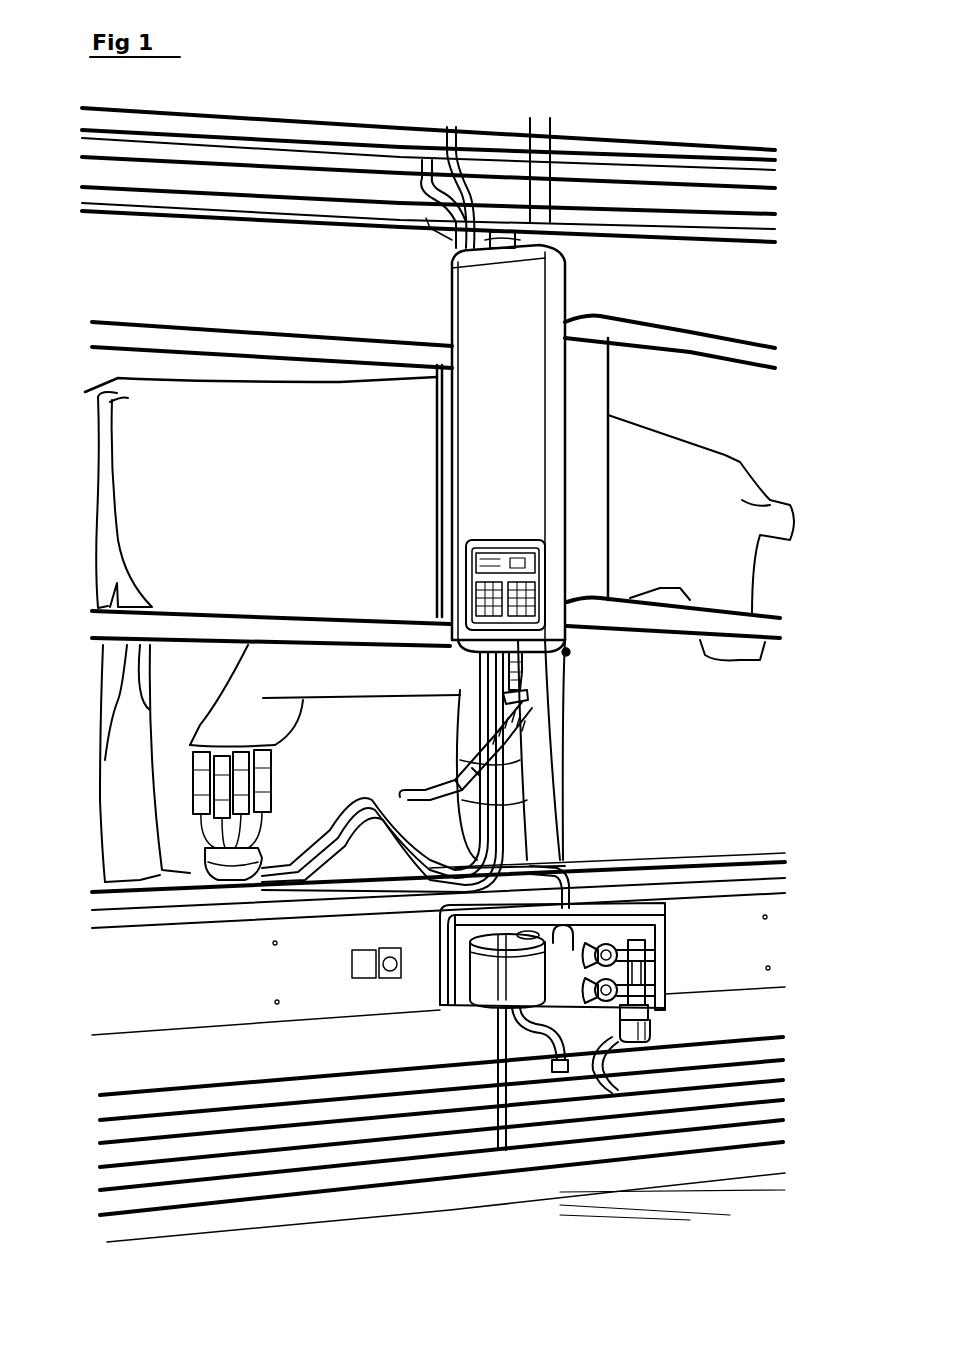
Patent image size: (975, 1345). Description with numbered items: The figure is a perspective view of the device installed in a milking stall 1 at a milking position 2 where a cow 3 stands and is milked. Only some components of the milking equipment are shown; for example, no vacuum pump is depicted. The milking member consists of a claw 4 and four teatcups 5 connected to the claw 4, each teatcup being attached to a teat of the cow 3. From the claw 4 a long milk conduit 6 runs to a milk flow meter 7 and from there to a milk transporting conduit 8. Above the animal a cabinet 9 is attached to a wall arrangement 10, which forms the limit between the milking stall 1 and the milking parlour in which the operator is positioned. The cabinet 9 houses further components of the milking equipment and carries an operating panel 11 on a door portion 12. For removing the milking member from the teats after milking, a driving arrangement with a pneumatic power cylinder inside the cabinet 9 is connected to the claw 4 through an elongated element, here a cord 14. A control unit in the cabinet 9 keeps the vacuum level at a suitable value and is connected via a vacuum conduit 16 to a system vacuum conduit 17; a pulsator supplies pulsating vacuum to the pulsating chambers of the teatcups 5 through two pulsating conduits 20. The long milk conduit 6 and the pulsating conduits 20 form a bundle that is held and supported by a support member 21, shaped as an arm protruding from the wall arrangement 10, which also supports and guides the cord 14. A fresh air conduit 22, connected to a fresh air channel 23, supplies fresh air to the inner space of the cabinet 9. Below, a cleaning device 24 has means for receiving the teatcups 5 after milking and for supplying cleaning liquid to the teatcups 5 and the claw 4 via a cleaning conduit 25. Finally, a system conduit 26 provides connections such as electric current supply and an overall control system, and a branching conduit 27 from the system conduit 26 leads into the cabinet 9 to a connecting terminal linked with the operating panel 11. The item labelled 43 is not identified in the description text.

The milking stall 1 is at (673, 676).
The milking position 2 is at (271, 680).
The cow 3 is at (120, 446).
The claw 4 is at (215, 895).
The teatcups 5 is at (205, 785).
The long milk conduit 6 is at (558, 862).
The milk flow meter 7 is at (468, 1005).
The milk transporting conduit 8 is at (320, 1078).
The cabinet 9 is at (565, 395).
The wall arrangement 10 is at (598, 322).
The operating panel 11 is at (560, 640).
The door portion 12 is at (480, 465).
The cord 14 is at (530, 745).
The vacuum conduit 16 is at (452, 246).
The system vacuum conduit 17 is at (304, 160).
The pulsating conduits 20 is at (480, 718).
The support member 21 is at (505, 745).
The fresh air conduit 22 is at (450, 146).
The fresh air channel 23 is at (384, 138).
The cleaning device 24 is at (655, 970).
The cleaning conduit 25 is at (710, 1085).
The system conduit 26 is at (262, 207).
The branching conduit 27 is at (510, 245).
The sensor 43 is at (570, 656).